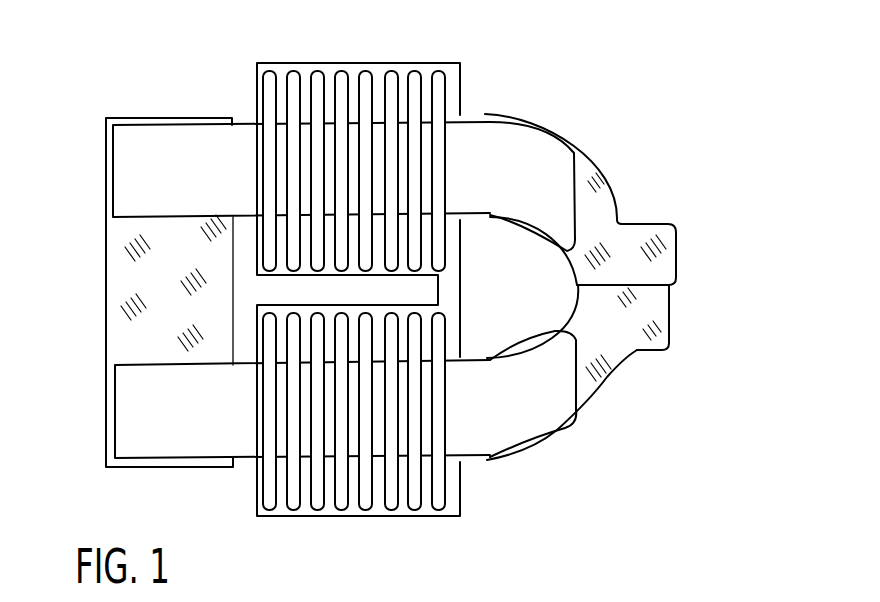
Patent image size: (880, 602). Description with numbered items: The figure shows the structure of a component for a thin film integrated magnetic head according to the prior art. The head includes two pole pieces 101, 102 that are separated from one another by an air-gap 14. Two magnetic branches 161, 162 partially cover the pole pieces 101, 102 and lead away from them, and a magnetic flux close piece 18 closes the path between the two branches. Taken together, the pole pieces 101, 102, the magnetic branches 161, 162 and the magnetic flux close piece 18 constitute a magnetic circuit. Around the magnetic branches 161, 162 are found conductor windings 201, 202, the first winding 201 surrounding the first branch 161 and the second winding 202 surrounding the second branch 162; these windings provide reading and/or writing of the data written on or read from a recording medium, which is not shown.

The magnetic flux close piece 18 is at (117, 285).
The conductor winding 202 is at (390, 75).
The conductor winding 201 is at (397, 503).
The magnetic branch 162 is at (540, 140).
The magnetic branch 161 is at (540, 418).
The pole piece 102 is at (665, 242).
The pole piece 101 is at (626, 336).
The air-gap 14 is at (668, 286).